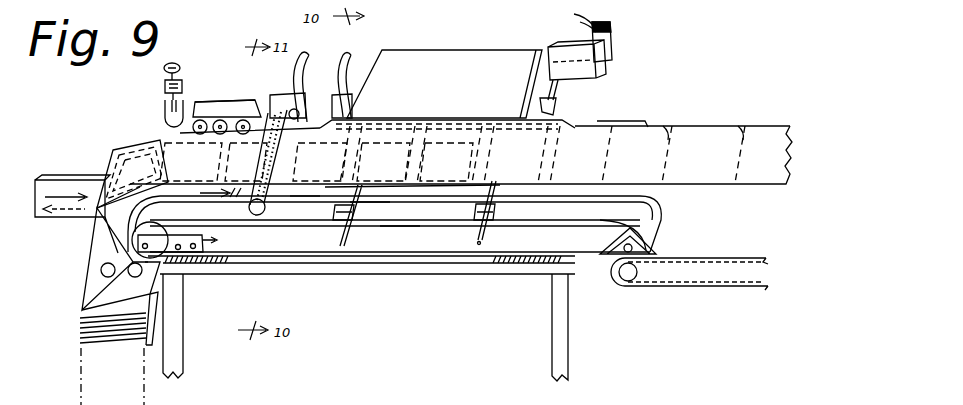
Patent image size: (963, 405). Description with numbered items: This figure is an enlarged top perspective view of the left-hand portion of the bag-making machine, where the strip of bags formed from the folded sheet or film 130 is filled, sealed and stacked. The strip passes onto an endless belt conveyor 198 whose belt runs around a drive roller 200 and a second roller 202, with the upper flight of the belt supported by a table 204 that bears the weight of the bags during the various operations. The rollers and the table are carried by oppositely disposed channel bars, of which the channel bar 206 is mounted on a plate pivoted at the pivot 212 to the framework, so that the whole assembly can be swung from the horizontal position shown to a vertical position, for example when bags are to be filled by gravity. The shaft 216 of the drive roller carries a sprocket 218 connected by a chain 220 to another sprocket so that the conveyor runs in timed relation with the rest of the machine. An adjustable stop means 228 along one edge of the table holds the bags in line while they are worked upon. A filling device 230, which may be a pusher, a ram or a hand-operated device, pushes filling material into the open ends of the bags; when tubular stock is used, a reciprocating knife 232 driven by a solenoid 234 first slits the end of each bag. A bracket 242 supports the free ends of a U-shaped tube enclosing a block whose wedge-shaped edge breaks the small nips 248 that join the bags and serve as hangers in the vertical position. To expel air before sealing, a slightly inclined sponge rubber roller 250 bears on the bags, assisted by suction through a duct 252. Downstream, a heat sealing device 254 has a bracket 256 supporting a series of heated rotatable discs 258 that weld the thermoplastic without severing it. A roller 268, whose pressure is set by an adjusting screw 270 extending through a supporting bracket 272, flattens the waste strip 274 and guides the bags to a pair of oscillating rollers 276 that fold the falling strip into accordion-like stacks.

The sheet or film 130 is at (703, 135).
The endless belt conveyor 198 is at (305, 198).
The drive roller 200 is at (645, 213).
The roller 202 is at (140, 219).
The table 204 is at (368, 213).
The channel bar 206 is at (398, 234).
The pivot 212 is at (208, 266).
The shaft 216 is at (651, 243).
The sprocket 218 is at (637, 272).
The chain 220 is at (715, 288).
The adjustable stop means 228 is at (440, 187).
The filling device 230 is at (463, 72).
The reciprocating knife 232 is at (549, 105).
The solenoid 234 is at (613, 41).
The bracket 242 is at (350, 116).
The nips 248 is at (746, 133).
The sponge rubber roller 250 is at (248, 208).
The duct 252 is at (313, 110).
The heat sealing device 254 is at (239, 100).
The bracket 256 is at (214, 110).
The heated rotatable discs 258 is at (220, 137).
The roller 268 is at (164, 126).
The adjusting screw 270 is at (178, 62).
The supporting bracket 272 is at (183, 82).
The waste strip 274 is at (118, 144).
The oscillating rollers 276 is at (137, 260).